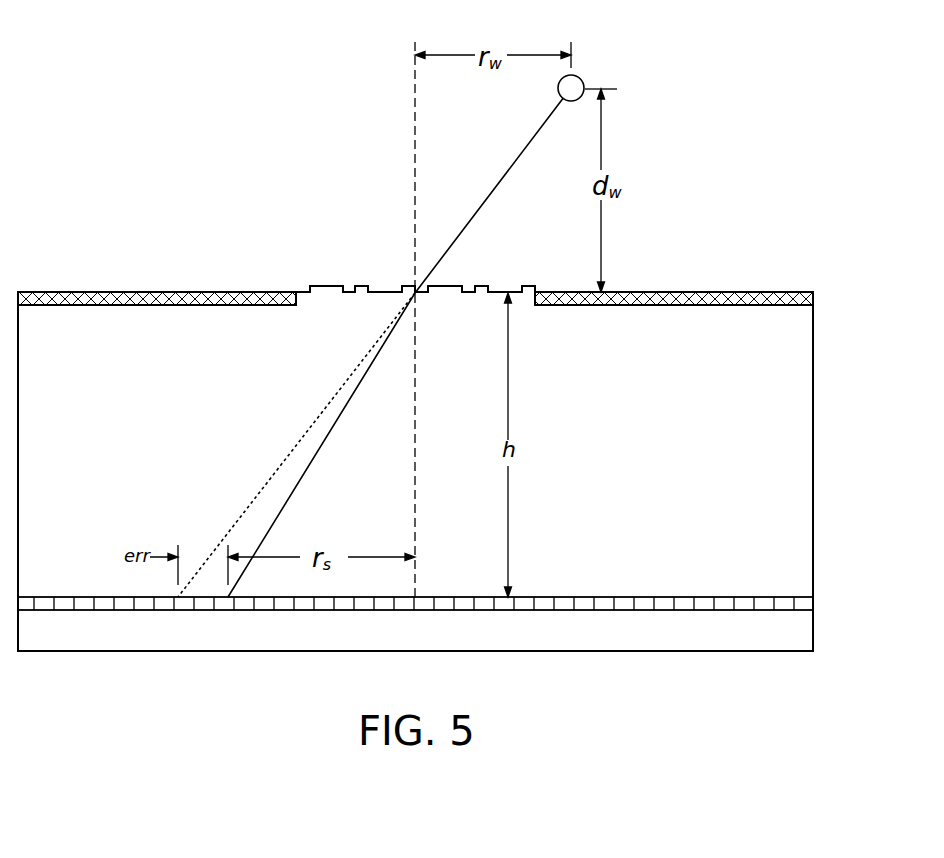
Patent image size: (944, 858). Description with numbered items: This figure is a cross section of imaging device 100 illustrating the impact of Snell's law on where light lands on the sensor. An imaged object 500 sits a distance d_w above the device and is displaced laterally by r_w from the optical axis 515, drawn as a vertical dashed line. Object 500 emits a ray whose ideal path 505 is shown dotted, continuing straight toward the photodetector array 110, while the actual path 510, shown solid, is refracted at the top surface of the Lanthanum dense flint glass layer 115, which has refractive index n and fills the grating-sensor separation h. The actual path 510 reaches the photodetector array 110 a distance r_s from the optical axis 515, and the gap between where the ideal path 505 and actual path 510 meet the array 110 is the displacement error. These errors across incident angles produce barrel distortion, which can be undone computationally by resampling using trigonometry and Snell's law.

The imaging device 100 is at (125, 197).
The photodetector array 110 is at (415, 622).
The Lanthanum dense flint glass layer 115 is at (415, 358).
The imaged object 500 is at (581, 78).
The ideal path 505 is at (295, 447).
The actual path 510 is at (309, 465).
The optical axis 515 is at (416, 126).